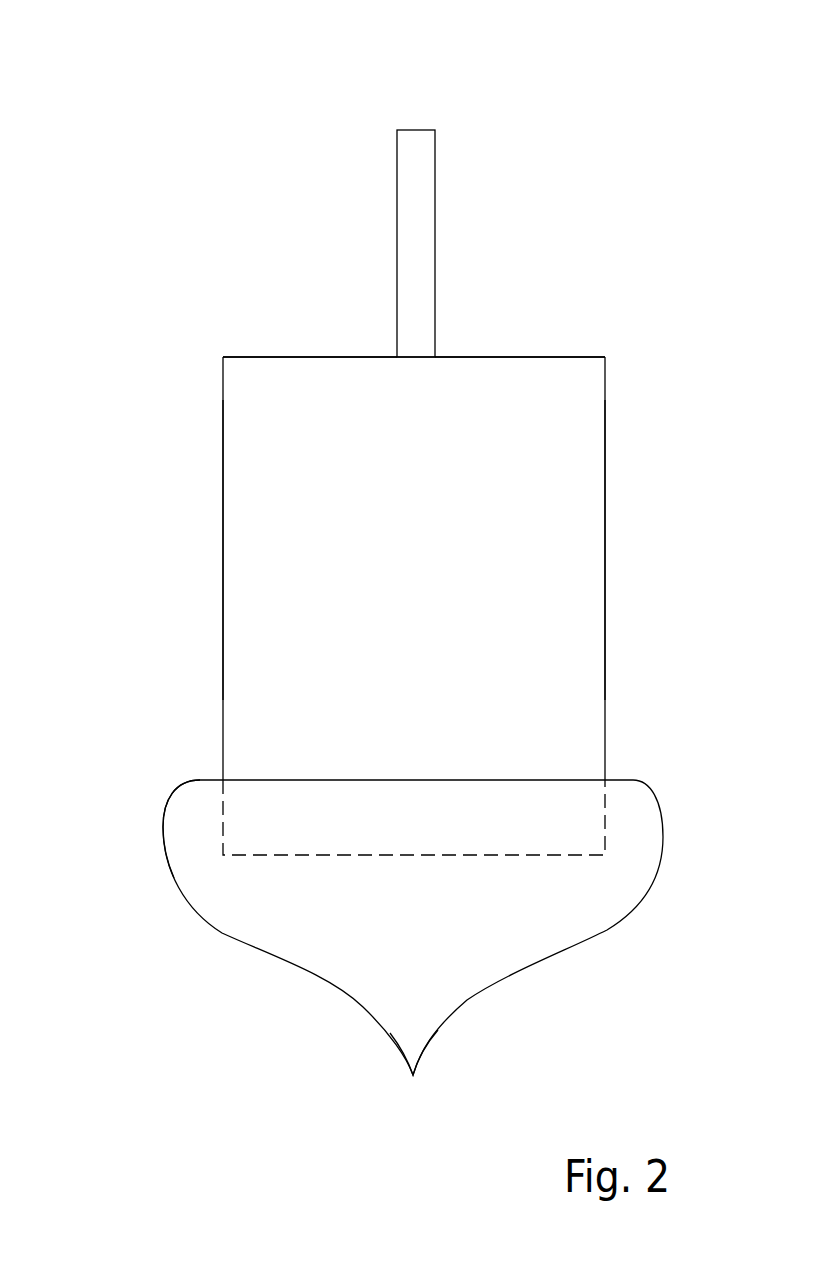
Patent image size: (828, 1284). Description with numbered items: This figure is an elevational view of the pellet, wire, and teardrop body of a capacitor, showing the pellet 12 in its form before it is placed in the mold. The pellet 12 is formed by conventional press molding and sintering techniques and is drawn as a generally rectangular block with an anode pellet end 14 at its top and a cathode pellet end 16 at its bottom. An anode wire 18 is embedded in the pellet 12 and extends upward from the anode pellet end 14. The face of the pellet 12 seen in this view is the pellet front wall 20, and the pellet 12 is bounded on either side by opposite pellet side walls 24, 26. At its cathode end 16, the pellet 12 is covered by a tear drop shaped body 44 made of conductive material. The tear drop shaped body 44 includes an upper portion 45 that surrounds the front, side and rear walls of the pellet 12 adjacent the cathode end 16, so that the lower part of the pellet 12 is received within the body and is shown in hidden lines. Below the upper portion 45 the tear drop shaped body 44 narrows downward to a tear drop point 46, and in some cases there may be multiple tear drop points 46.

The pellet 12 is at (207, 357).
The anode pellet end 14 is at (373, 280).
The cathode pellet end 16 is at (463, 884).
The anode wire 18 is at (331, 178).
The pellet front wall 20 is at (440, 505).
The pellet side wall 24 is at (207, 486).
The pellet side wall 26 is at (621, 488).
The tear drop shaped body 44 is at (207, 933).
The upper portion 45 is at (148, 825).
The tear drop point 46 is at (397, 1077).